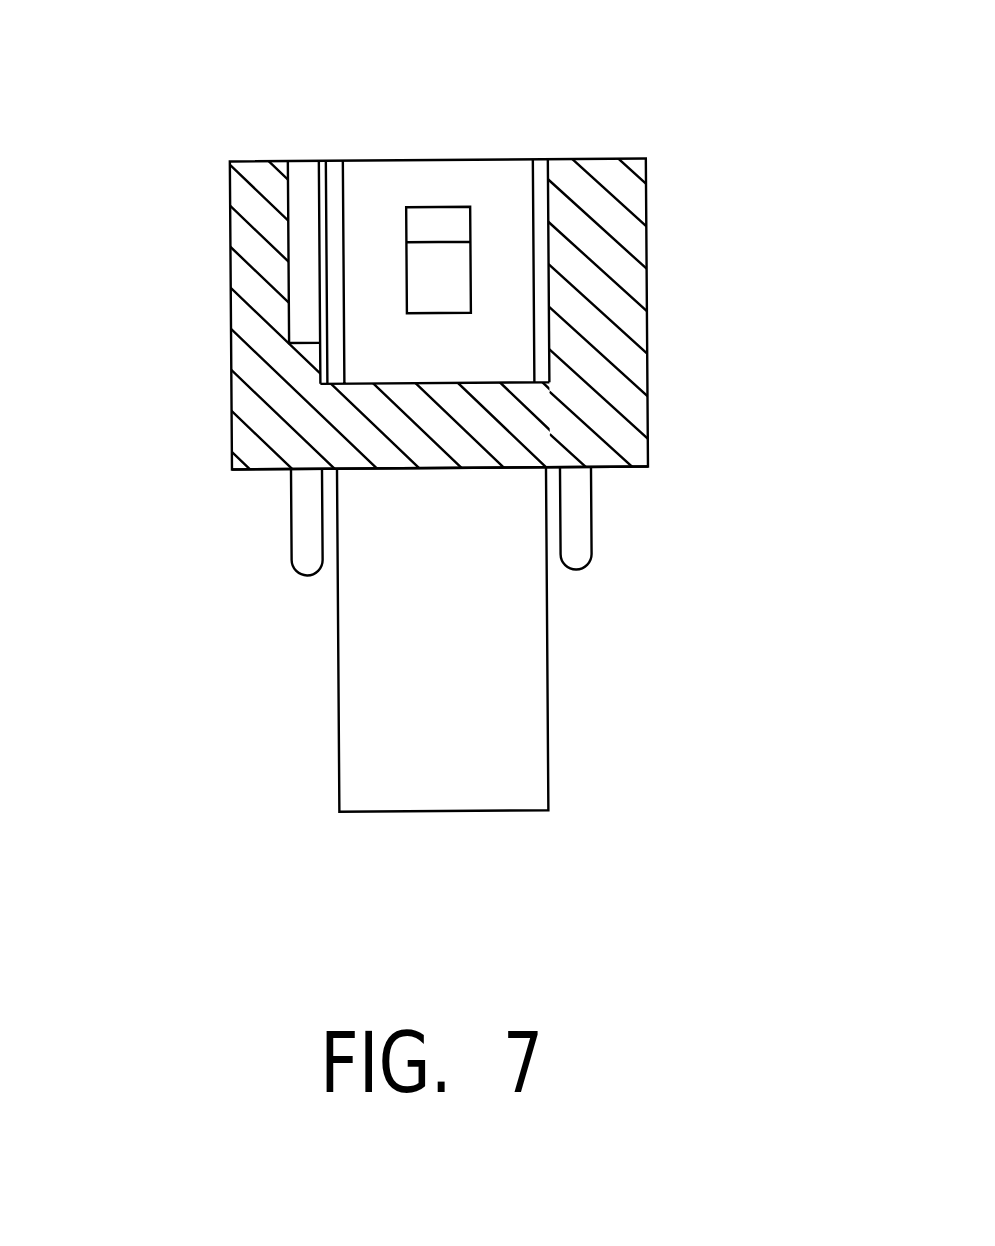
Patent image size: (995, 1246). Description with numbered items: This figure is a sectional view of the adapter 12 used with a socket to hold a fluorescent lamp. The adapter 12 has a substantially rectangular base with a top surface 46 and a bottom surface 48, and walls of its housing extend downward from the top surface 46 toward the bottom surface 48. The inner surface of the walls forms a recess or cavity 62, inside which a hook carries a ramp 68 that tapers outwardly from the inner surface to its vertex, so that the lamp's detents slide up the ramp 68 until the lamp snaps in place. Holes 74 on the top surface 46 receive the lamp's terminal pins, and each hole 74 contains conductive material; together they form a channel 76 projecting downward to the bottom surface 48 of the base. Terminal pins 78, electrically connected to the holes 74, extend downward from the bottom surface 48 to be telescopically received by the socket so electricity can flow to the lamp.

The adapter 12 is at (710, 190).
The top surface 46 is at (597, 160).
The bottom surface 48 is at (618, 469).
The recess or cavity 62 is at (508, 222).
The ramp 68 is at (442, 222).
The holes 74 is at (303, 160).
The channel 76 is at (300, 268).
The terminal pins 78 is at (290, 547).